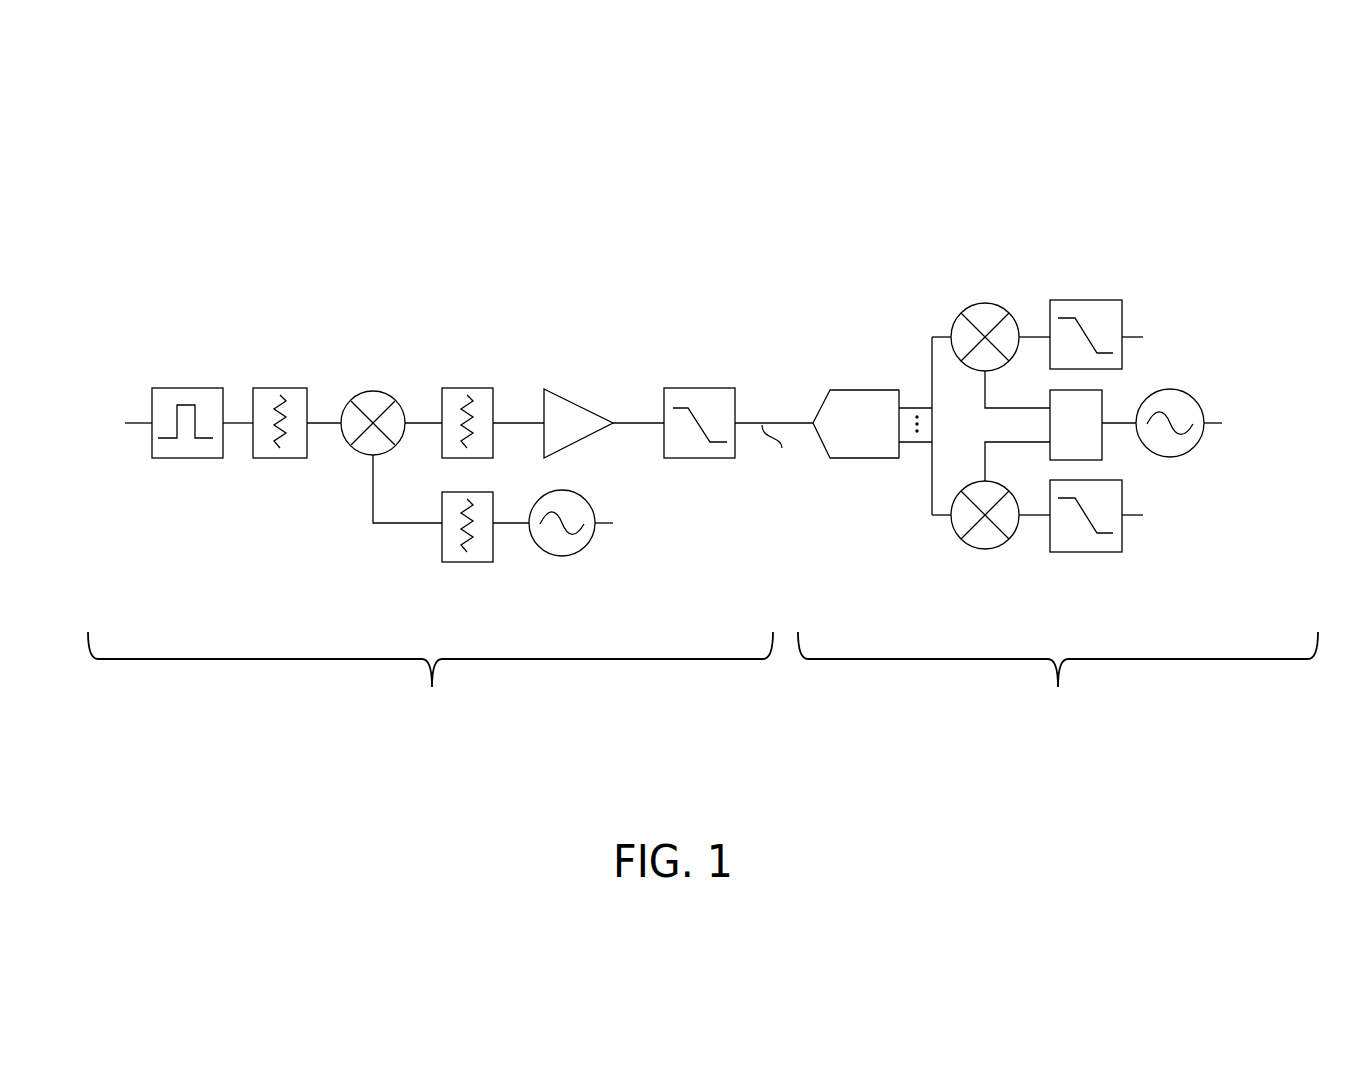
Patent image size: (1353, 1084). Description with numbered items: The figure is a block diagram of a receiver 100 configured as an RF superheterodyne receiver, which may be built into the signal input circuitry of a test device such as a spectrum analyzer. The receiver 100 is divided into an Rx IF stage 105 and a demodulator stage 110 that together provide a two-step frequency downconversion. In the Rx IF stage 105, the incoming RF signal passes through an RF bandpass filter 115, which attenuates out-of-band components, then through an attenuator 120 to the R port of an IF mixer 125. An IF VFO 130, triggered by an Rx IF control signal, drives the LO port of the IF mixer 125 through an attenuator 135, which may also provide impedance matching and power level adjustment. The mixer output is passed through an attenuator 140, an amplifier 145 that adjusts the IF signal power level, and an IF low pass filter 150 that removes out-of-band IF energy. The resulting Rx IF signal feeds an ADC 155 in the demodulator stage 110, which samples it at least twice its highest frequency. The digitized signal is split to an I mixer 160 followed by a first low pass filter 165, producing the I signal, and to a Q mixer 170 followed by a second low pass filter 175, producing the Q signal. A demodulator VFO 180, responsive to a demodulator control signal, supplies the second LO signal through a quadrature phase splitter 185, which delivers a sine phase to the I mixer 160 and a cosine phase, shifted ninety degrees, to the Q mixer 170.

The receiver 100 is at (318, 250).
The Rx IF stage 105 is at (405, 752).
The demodulator stage 110 is at (1034, 751).
The RF bandpass filter 115 is at (192, 388).
The attenuator 120 is at (283, 388).
The IF mixer 125 is at (373, 391).
The IF VFO 130 is at (561, 556).
The attenuator 135 is at (468, 562).
The attenuator 140 is at (470, 388).
The amplifier 145 is at (558, 395).
The IF low pass filter 150 is at (692, 388).
The ADC 155 is at (860, 390).
The I mixer 160 is at (985, 303).
The first low pass filter 165 is at (1085, 300).
The Q mixer 170 is at (981, 550).
The second low pass filter 175 is at (1083, 552).
The demodulator VFO 180 is at (1195, 406).
The quadrature phase splitter 185 is at (1104, 450).